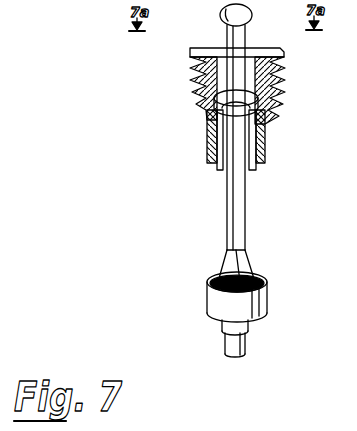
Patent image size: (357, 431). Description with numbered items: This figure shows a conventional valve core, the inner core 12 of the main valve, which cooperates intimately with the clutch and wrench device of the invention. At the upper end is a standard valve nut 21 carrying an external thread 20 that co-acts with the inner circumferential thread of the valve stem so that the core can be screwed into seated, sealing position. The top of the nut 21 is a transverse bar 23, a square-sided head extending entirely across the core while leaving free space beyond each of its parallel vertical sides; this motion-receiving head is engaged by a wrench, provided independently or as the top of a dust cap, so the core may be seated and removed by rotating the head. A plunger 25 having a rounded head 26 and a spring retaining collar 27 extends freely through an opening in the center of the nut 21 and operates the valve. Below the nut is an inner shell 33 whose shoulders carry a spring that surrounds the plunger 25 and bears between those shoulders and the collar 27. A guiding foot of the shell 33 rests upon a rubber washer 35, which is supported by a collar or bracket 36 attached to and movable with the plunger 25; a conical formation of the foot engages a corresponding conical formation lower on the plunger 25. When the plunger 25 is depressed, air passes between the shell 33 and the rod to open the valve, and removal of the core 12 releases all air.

The inner core 12 is at (264, 329).
The thread 20 is at (196, 80).
The standard valve nut 21 is at (282, 118).
The transverse bar 23 is at (208, 50).
The plunger 25 is at (227, 195).
The rounded head 26 is at (221, 14).
The spring retaining collar 27 is at (216, 107).
The inner shell 33 is at (207, 146).
The rubber washer 35 is at (208, 276).
The collar or bracket 36 is at (222, 300).